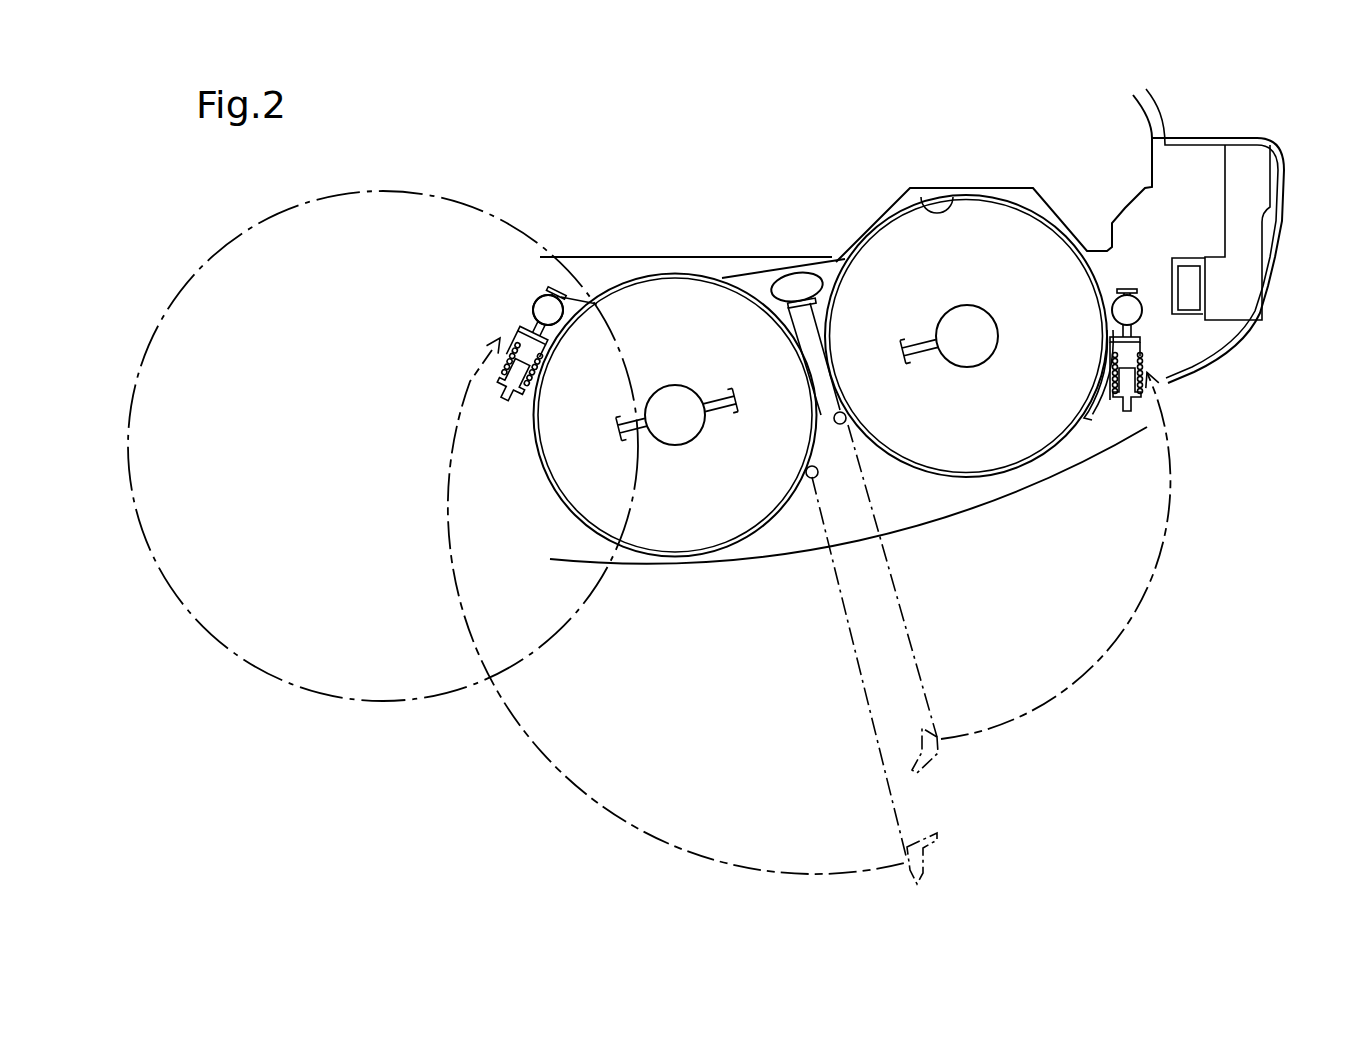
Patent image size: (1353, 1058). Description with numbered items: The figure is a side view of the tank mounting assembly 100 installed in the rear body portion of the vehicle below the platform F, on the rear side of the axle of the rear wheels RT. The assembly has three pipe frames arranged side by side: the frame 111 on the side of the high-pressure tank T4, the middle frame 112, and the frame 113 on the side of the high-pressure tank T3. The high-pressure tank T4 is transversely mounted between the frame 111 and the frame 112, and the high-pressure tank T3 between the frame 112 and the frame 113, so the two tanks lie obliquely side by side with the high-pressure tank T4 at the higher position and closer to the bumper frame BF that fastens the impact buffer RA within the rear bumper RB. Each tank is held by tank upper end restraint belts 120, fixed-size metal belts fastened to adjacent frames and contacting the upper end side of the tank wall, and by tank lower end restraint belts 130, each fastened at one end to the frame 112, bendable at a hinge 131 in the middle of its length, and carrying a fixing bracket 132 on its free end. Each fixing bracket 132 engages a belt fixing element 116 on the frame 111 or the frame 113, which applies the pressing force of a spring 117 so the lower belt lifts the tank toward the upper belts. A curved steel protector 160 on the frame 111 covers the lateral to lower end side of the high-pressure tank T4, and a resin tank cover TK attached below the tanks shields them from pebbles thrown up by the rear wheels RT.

The tank mounting assembly 100 is at (900, 512).
The frame 111 is at (1140, 316).
The frame 112 is at (797, 274).
The frame 113 is at (545, 300).
The belt fixing element 116 is at (506, 392).
The spring 117 is at (512, 326).
The tank upper end restraint belt 120 is at (700, 273).
The tank lower end restraint belt 130 is at (864, 693).
The hinge 131 is at (840, 425).
The fixing bracket 132 is at (538, 332).
The protector 160 is at (1097, 415).
The high-pressure tank T3 is at (683, 545).
The high-pressure tank T4 is at (1054, 432).
The core P is at (641, 434).
The platform F is at (950, 200).
The impact buffer RA is at (1233, 316).
The rear bumper RB is at (1278, 273).
The bumper frame BF is at (1188, 314).
The tank cover TK is at (993, 500).
The rear wheels RT is at (364, 702).